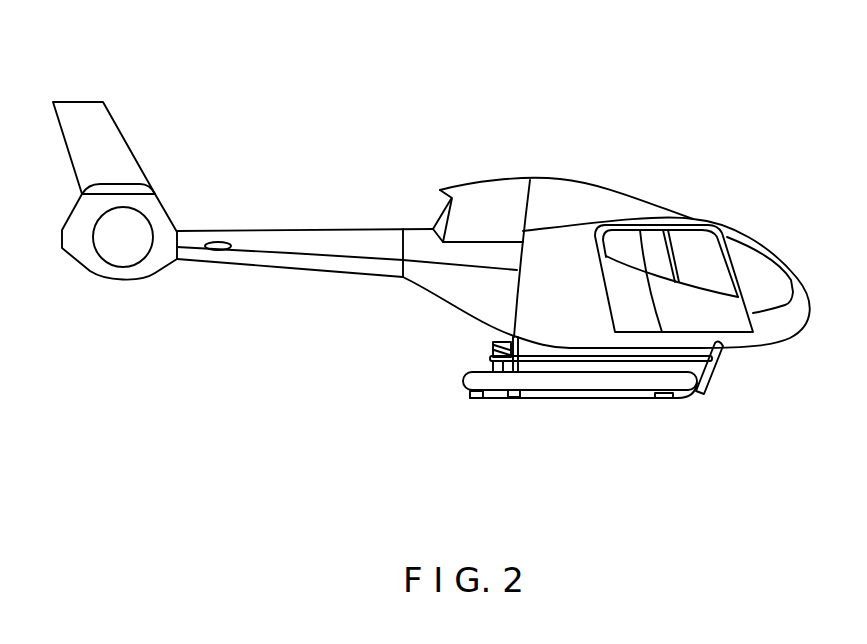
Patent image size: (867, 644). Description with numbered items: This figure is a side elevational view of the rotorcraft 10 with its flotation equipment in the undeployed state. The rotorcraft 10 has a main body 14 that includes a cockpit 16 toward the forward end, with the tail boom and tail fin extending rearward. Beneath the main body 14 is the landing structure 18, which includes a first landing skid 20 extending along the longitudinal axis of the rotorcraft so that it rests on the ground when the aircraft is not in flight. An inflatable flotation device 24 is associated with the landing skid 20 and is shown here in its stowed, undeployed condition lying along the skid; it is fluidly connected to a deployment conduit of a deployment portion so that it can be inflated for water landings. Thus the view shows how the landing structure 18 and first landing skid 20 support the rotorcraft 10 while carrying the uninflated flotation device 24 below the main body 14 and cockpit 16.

The rotorcraft 10 is at (431, 256).
The main body 14 is at (695, 218).
The cockpit 16 is at (710, 262).
The landing structure 18 is at (727, 370).
The first landing skid 20 is at (642, 402).
The inflatable flotation device 24 is at (570, 378).